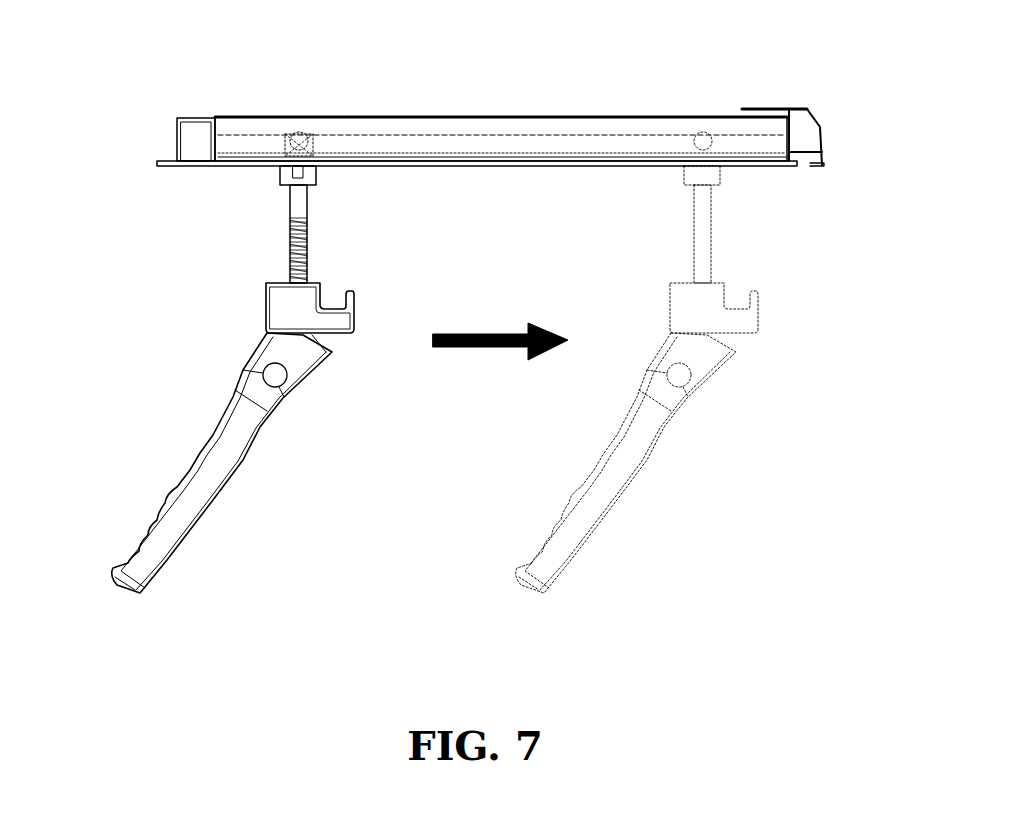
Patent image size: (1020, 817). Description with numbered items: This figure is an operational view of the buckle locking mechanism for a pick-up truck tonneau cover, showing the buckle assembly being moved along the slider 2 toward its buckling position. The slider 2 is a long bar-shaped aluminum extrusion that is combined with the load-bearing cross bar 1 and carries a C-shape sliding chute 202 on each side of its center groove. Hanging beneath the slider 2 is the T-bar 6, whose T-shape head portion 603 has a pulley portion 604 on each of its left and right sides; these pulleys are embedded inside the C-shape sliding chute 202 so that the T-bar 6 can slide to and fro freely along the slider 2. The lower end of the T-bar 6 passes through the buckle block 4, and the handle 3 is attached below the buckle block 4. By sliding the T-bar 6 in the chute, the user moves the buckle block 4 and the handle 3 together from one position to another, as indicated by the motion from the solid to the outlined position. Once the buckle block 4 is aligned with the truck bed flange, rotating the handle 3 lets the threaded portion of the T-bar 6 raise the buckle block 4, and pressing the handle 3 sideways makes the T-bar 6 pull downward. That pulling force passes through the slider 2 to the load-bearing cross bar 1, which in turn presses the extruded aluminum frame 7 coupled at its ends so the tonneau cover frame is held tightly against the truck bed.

The load-bearing cross bar 1 is at (173, 172).
The slider 2 is at (548, 117).
The C-shape sliding chute 202 is at (353, 147).
The T-shape head portion 603 is at (300, 130).
The pulley portion 604 is at (292, 150).
The T-bar 6 is at (280, 183).
The buckle block 4 is at (267, 313).
The handle 3 is at (188, 532).
The extruded aluminum frame 7 is at (822, 128).